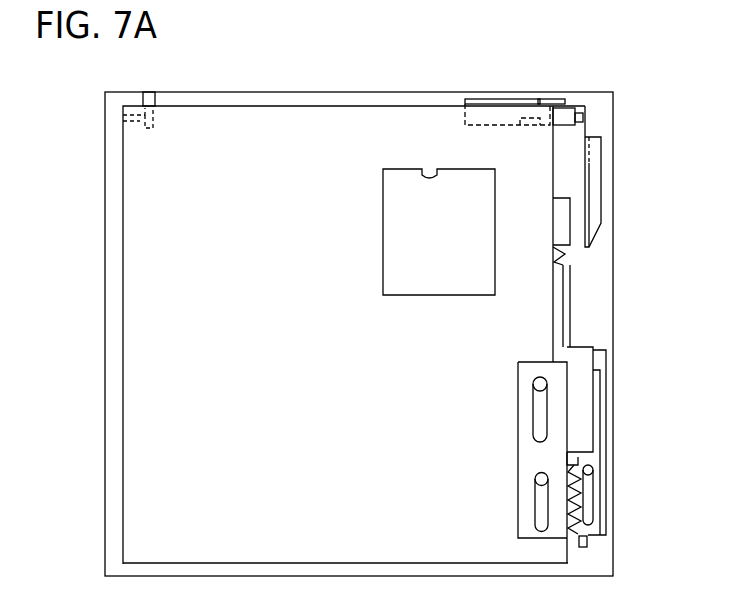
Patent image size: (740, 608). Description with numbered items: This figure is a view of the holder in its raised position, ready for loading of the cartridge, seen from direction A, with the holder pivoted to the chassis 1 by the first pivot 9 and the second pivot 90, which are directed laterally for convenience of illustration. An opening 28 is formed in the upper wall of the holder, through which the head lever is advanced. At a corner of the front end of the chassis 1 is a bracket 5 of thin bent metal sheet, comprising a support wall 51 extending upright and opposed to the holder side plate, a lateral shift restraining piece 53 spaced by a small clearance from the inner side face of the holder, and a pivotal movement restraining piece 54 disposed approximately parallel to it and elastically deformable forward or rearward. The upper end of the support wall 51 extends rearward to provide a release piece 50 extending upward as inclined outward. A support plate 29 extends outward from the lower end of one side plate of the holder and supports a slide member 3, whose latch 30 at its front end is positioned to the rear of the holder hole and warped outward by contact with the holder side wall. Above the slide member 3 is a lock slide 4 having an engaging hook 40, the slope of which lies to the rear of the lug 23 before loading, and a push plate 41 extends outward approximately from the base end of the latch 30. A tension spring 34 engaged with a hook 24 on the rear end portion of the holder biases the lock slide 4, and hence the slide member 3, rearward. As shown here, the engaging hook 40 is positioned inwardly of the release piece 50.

The chassis 1 is at (118, 482).
The slide member 3 is at (593, 501).
The lock slide 4 is at (516, 414).
The bracket 5 is at (597, 240).
The first pivot 9 is at (566, 110).
The lug 23 is at (556, 226).
The hook 24 is at (586, 547).
The opening 28 is at (434, 176).
The support plate 29 is at (605, 423).
The latch 30 is at (560, 265).
The tension spring 34 is at (578, 512).
The engaging hook 40 is at (566, 305).
The push plate 41 is at (590, 346).
The release piece 50 is at (599, 188).
The support wall 51 is at (592, 118).
The lateral shift restraining piece 53 is at (527, 116).
The pivotal movement restraining piece 54 is at (552, 98).
The second pivot 90 is at (126, 128).